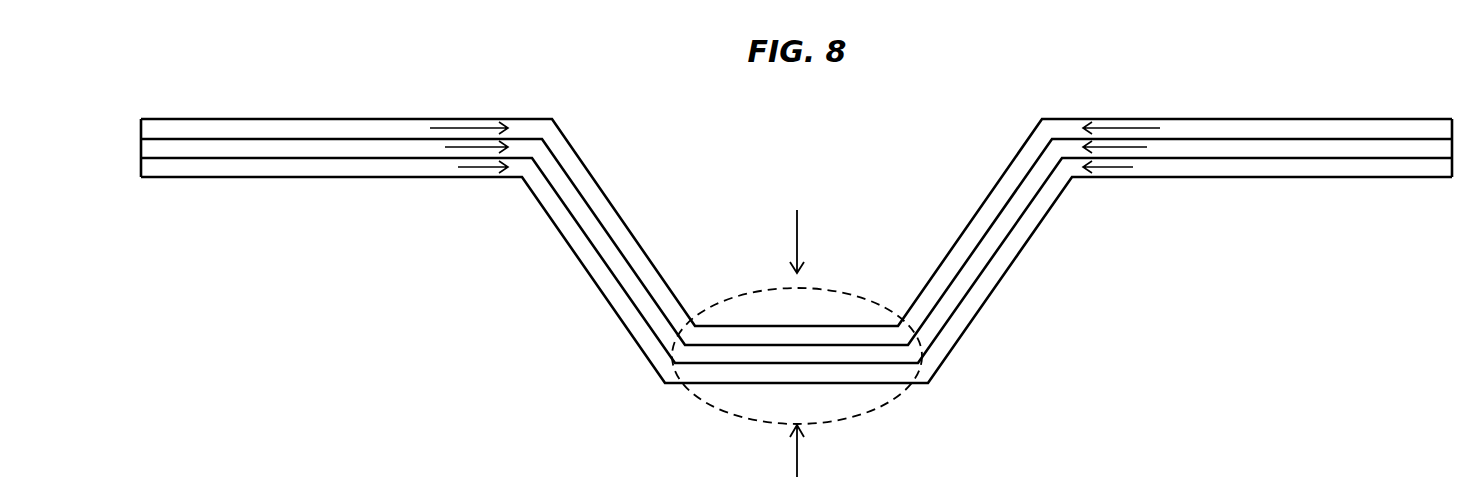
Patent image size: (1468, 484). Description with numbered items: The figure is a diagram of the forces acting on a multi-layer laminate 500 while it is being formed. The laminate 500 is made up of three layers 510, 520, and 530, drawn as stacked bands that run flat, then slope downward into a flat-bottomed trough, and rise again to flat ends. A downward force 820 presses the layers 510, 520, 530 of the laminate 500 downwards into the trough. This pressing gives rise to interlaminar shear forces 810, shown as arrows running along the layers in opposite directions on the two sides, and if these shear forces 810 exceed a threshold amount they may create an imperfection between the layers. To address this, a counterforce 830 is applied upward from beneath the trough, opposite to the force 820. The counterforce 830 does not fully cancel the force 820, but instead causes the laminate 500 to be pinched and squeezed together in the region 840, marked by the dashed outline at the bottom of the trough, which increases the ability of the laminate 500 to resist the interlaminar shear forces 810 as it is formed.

The multi-layer laminate 500 is at (406, 272).
The layer 510 is at (230, 128).
The layer 520 is at (190, 149).
The layer 530 is at (227, 165).
The interlaminar shear forces 810 is at (473, 127).
The force 820 is at (797, 225).
The counterforce 830 is at (797, 457).
The region 840 is at (733, 297).